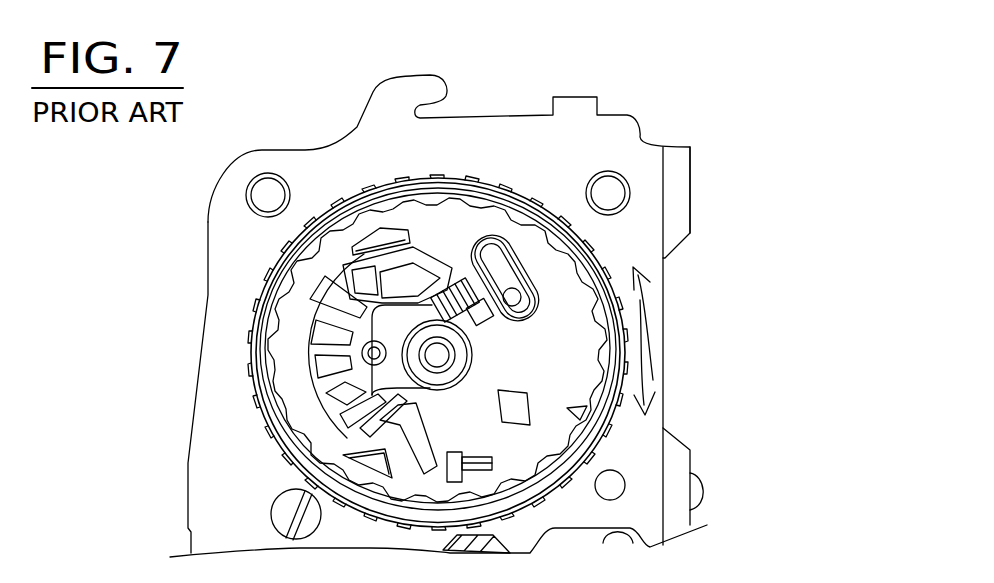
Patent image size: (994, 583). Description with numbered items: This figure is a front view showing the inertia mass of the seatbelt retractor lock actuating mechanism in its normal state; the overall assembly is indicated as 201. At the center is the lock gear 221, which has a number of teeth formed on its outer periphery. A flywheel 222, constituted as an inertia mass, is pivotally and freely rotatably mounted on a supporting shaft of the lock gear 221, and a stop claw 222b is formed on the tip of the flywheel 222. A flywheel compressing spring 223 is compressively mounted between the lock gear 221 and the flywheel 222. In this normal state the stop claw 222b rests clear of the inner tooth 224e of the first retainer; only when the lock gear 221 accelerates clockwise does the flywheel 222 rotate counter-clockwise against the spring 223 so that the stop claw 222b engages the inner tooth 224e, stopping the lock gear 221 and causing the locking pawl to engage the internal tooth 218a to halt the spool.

The ratchet mechanism assembly 201 is at (706, 114).
The internal tooth 218a is at (580, 223).
The lock gear 221 is at (257, 353).
The flywheel 222 is at (317, 393).
The stop claw 222b is at (347, 505).
The flywheel compressing spring 223 is at (488, 232).
The inner tooth 224e is at (570, 412).